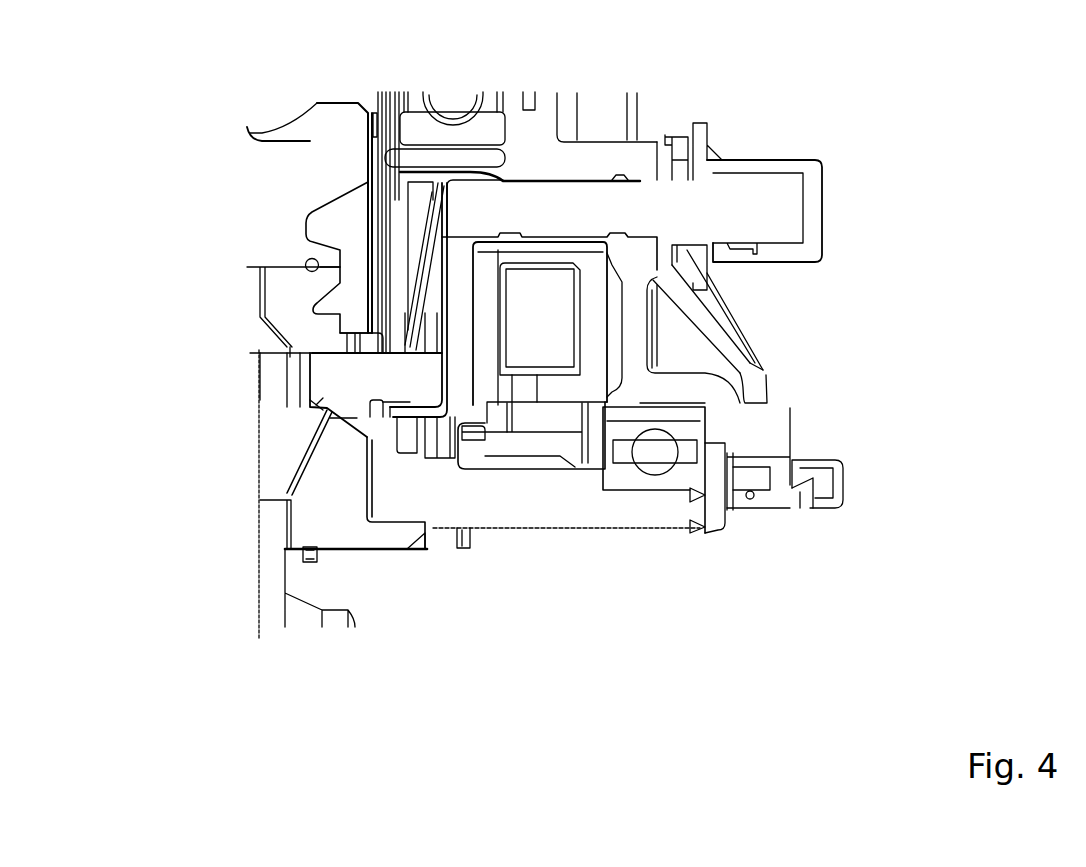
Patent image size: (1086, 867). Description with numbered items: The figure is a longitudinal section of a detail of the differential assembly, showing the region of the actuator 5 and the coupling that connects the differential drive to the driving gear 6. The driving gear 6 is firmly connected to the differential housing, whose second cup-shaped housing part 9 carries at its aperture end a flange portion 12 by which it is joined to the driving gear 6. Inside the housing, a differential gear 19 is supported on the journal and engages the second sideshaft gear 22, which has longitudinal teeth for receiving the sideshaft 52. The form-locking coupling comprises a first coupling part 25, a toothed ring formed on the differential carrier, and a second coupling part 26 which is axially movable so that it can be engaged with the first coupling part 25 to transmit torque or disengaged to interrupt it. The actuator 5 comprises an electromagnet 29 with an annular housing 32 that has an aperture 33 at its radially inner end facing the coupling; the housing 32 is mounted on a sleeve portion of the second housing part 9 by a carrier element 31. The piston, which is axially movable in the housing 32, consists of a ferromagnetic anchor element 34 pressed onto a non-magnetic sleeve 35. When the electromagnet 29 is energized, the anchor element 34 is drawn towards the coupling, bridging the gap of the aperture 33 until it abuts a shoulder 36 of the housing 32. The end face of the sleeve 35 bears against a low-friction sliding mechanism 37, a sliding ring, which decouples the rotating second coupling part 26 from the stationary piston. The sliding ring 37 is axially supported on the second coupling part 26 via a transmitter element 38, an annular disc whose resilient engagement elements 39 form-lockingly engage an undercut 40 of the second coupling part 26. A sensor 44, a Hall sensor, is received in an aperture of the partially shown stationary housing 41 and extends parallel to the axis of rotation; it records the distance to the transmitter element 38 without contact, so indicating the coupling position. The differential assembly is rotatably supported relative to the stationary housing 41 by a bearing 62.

The actuator 5 is at (593, 226).
The driving gear 6 is at (286, 157).
The second cup-shaped housing part 9 is at (470, 514).
The flange portion 12 is at (305, 283).
The differential gear 19 is at (277, 456).
The second sideshaft gear 22 is at (306, 511).
The first coupling part 25 is at (290, 383).
The second coupling part 26 is at (318, 387).
The electromagnet 29 is at (612, 317).
The carrier element 31 is at (545, 468).
The annular housing 32 is at (592, 285).
The aperture 33 is at (521, 388).
The anchor element 34 is at (560, 423).
The sleeve 35 is at (502, 445).
The shoulder 36 is at (478, 417).
The sliding mechanism 37 is at (452, 452).
The transmitter element 38 is at (423, 187).
The resilient engagement element 39 is at (388, 408).
The undercut 40 is at (379, 405).
The stationary housing 41 is at (581, 150).
The sensor 44 is at (712, 193).
The sideshaft 52 is at (296, 586).
The bearing 62 is at (658, 490).